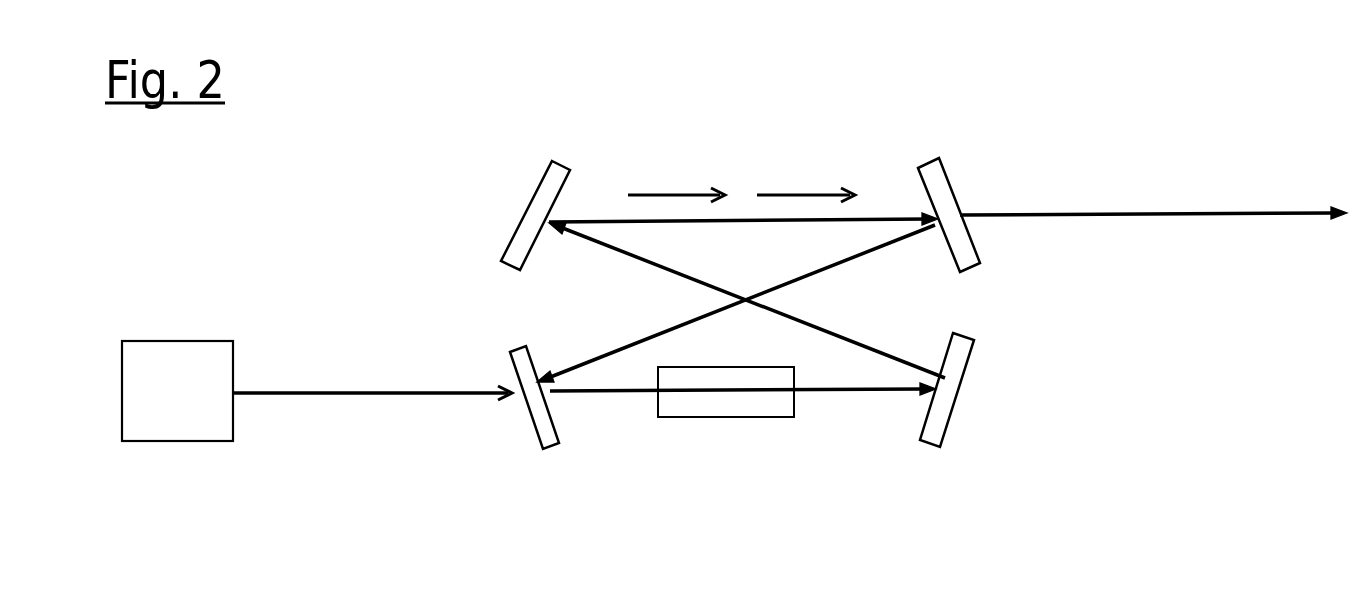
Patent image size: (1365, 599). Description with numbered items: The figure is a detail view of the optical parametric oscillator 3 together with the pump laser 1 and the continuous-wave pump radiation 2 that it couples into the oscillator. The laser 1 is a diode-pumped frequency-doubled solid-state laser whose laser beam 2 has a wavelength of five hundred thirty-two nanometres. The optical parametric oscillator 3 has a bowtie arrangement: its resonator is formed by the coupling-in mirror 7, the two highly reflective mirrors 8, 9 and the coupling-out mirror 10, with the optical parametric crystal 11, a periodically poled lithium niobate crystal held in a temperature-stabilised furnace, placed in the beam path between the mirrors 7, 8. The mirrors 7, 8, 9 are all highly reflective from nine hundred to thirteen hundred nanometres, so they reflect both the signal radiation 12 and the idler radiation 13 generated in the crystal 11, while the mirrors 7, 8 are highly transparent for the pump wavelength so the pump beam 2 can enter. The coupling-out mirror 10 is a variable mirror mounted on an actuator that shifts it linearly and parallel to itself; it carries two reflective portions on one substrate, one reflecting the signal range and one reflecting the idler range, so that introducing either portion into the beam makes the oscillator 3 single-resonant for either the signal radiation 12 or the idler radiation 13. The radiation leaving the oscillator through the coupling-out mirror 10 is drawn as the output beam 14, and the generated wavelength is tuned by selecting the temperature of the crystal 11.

The laser 1 is at (193, 372).
The laser beam 2 is at (400, 395).
The optical parametric oscillator 3 is at (982, 135).
The coupling-in mirror 7 is at (540, 417).
The highly reflective mirror 8 is at (938, 415).
The highly reflective mirror 9 is at (542, 210).
The coupling-out mirror 10 is at (940, 197).
The optical parametric crystal 11 is at (727, 403).
The signal radiation generated 12 is at (700, 220).
The idler radiation generated 13 is at (825, 220).
The output laser beam 14 is at (1153, 213).